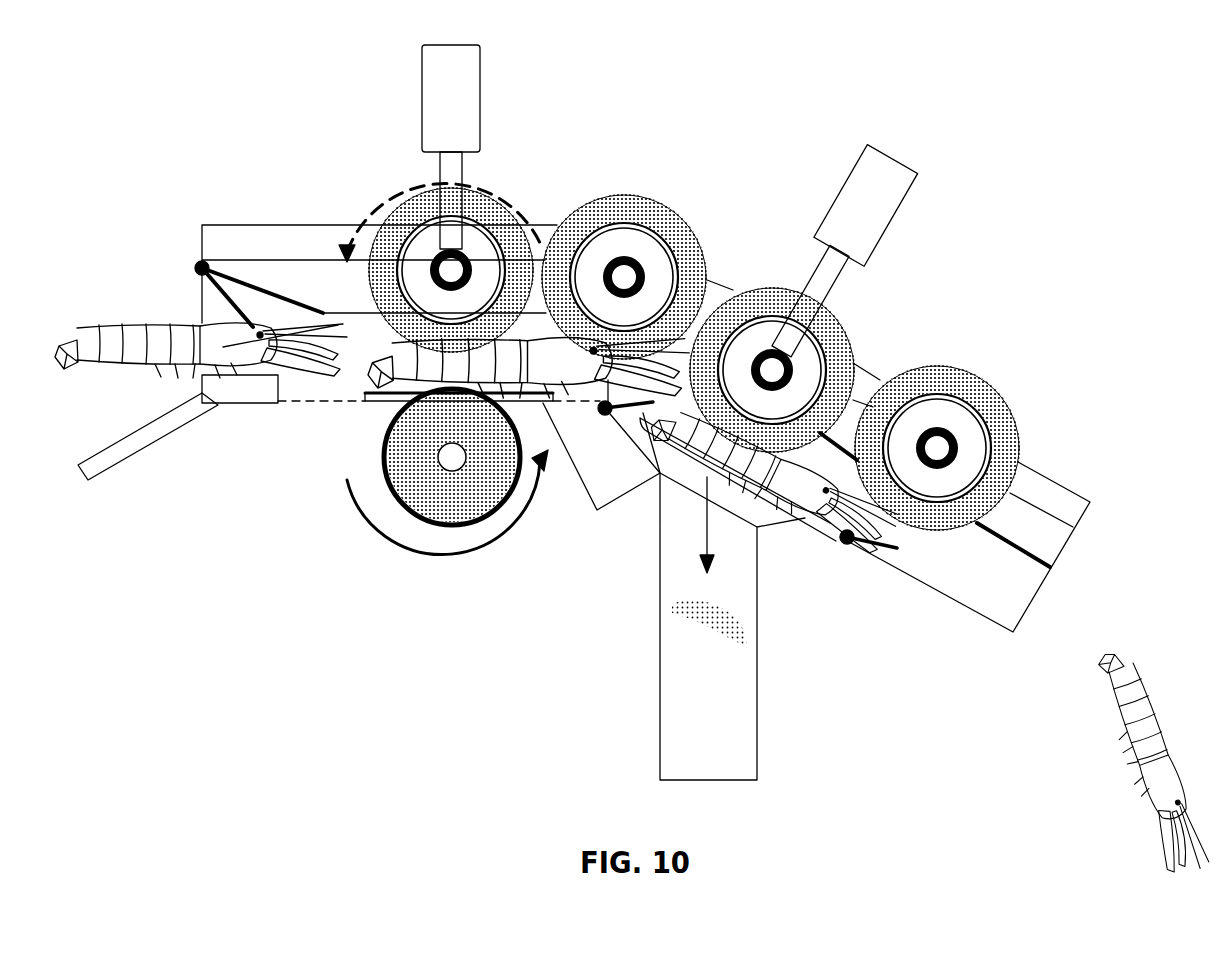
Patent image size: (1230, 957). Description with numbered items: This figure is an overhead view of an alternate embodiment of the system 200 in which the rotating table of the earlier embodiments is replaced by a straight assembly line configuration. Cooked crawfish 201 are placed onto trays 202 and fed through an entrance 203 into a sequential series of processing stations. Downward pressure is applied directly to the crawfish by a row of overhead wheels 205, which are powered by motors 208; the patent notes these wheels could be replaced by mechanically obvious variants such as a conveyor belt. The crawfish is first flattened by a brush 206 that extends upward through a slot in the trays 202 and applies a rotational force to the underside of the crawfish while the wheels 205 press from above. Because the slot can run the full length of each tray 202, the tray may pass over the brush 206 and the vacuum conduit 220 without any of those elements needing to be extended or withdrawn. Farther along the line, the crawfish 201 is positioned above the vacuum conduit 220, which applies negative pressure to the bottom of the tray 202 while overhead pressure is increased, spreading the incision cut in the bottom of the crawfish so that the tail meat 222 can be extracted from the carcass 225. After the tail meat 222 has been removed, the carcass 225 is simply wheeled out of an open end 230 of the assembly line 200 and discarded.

The system 200 is at (154, 150).
The cooked crawfish 201 is at (124, 316).
The trays 202 is at (469, 463).
The entrance 203 is at (217, 403).
The overhead wheels 205 is at (750, 290).
The brush 206 is at (407, 513).
The motors 208 is at (469, 108).
The vacuum conduit 220 is at (727, 742).
The tail meat 222 is at (693, 618).
The carcass 225 is at (1100, 748).
The open end 230 is at (1060, 567).